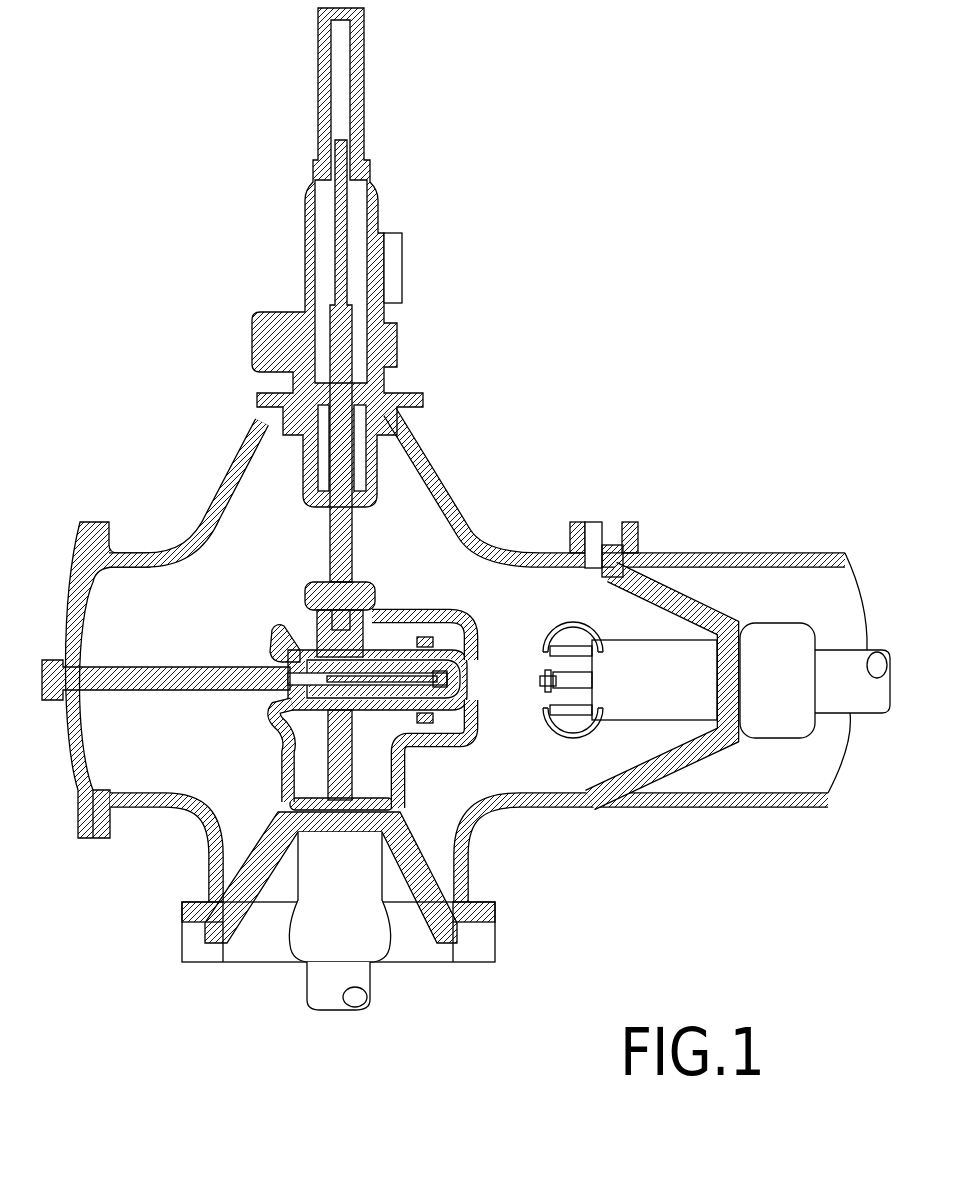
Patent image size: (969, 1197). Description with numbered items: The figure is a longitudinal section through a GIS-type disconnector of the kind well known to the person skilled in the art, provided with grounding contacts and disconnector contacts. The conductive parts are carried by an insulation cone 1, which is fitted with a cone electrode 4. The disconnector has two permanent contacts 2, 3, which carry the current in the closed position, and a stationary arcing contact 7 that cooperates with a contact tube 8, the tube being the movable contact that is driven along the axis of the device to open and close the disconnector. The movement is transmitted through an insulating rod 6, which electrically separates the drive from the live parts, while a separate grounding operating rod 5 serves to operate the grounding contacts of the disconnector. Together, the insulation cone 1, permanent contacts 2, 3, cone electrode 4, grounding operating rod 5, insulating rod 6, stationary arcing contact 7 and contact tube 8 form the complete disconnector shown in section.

The insulation cone 1 is at (262, 852).
The permanent contact 2 is at (575, 645).
The permanent contact 3 is at (405, 708).
The cone electrode 4 is at (308, 923).
The grounding operating rod 5 is at (327, 252).
The insulating rod 6 is at (255, 678).
The stationary arcing contact 7 is at (541, 681).
The contact tube 8 is at (400, 668).